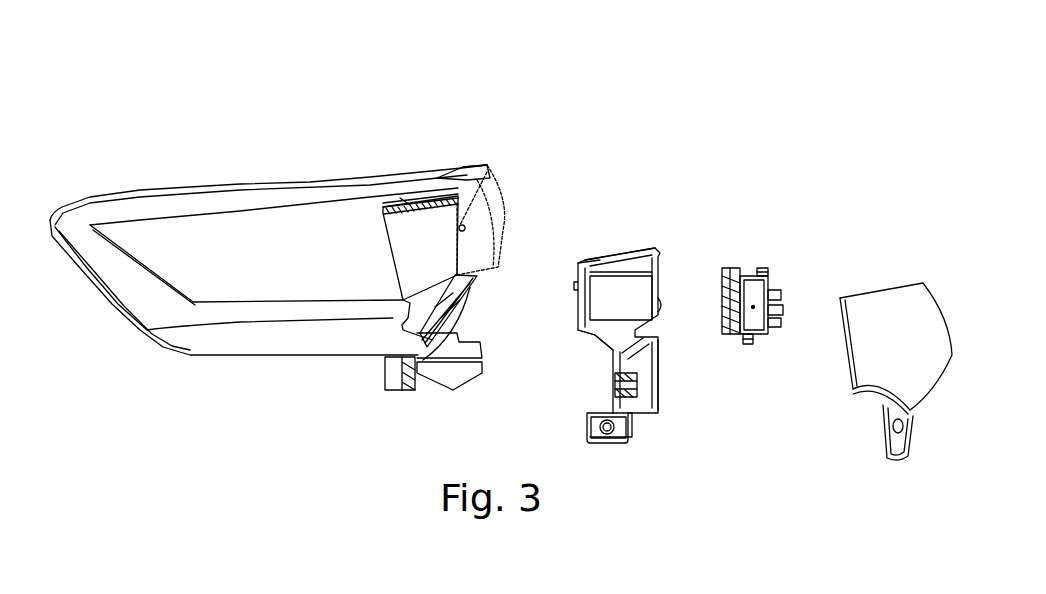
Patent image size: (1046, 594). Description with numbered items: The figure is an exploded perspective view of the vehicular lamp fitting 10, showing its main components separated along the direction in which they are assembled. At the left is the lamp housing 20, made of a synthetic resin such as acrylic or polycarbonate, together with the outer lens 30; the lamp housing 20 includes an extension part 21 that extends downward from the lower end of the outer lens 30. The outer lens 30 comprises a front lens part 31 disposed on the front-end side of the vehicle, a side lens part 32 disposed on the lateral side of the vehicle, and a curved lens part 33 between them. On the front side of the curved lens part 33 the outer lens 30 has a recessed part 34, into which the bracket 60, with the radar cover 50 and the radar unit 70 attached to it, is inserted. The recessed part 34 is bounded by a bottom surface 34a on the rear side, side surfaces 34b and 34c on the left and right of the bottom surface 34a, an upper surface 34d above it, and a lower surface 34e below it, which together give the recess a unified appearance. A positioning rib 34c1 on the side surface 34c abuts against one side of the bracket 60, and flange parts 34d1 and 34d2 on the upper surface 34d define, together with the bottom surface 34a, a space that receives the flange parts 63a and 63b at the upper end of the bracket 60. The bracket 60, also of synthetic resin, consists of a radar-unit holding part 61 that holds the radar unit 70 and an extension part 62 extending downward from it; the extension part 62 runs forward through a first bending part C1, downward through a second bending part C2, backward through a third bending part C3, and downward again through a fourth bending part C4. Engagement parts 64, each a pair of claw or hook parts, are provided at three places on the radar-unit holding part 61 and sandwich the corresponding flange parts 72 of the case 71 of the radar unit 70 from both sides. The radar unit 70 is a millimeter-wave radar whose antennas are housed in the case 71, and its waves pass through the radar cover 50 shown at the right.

The vehicular lamp fitting 10 is at (504, 86).
The lamp housing 20 is at (307, 256).
The extension part 21 is at (392, 380).
The outer lens 30 is at (172, 226).
The front lens part 31 is at (219, 226).
The side lens part 32 is at (503, 205).
The curved lens part 33 is at (410, 205).
The recessed part 34 is at (460, 239).
The bottom surface 34a is at (477, 278).
The side surface 34b is at (403, 253).
The side surface 34c is at (503, 250).
The positioning rib 34c1 is at (465, 228).
The upper surface 34d is at (440, 199).
The flange part 34d1 is at (405, 203).
The flange part 34d2 is at (463, 168).
The lower surface 34e is at (470, 320).
The radar cover 50 is at (890, 293).
The bracket 60 is at (633, 329).
The radar-unit holding part 61 is at (661, 288).
The extension part 62 is at (658, 395).
The flange part 63a is at (600, 260).
The flange part 63b is at (628, 252).
The engagement part 64 is at (662, 256).
The radar unit 70 is at (763, 308).
The case 71 is at (783, 303).
The flange part 72 is at (730, 269).
The first bending part C1 is at (598, 337).
The second bending part C2 is at (645, 352).
The third bending part C3 is at (645, 418).
The fourth bending part C4 is at (587, 423).